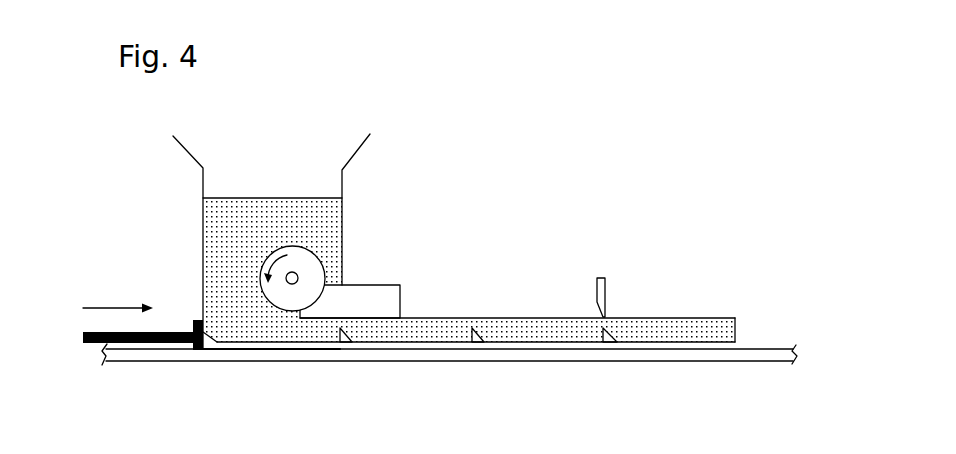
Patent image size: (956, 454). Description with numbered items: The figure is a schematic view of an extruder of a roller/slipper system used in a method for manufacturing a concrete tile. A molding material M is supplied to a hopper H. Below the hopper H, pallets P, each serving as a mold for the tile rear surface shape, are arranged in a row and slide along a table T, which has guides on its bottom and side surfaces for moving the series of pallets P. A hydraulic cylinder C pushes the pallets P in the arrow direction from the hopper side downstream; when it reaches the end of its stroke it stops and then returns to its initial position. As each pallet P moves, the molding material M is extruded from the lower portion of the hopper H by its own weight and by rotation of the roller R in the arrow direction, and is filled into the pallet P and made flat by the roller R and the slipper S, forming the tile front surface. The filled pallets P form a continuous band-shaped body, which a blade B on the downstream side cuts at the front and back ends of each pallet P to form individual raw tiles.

The hopper H is at (200, 164).
The molding material M is at (252, 198).
The roller R is at (315, 277).
The slipper S is at (400, 297).
The blade B is at (605, 292).
The hydraulic cylinder C is at (178, 332).
The table T is at (200, 357).
The pallet P is at (302, 342).